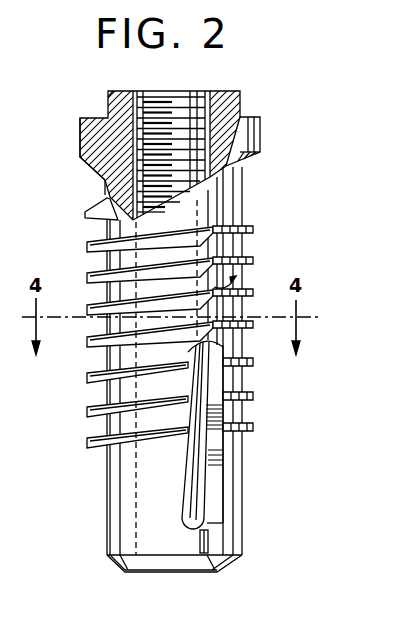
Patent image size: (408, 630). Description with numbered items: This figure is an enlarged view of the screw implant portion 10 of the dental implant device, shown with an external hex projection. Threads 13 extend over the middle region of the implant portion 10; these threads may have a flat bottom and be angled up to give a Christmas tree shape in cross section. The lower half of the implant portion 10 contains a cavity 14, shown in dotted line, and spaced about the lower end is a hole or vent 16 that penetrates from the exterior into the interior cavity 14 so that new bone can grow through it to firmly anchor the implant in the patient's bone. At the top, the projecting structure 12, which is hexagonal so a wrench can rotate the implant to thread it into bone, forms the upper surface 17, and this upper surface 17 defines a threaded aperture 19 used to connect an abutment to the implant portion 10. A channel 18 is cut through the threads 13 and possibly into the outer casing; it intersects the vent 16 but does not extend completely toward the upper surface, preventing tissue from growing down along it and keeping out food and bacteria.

The implant portion 10 is at (247, 194).
The projecting structure 12 is at (238, 102).
The threads 13 is at (250, 226).
The cavity 14 is at (136, 555).
The vent 16 is at (182, 511).
The upper surface 17 is at (238, 90).
The channel 18 is at (234, 280).
The threaded aperture 19 is at (113, 92).